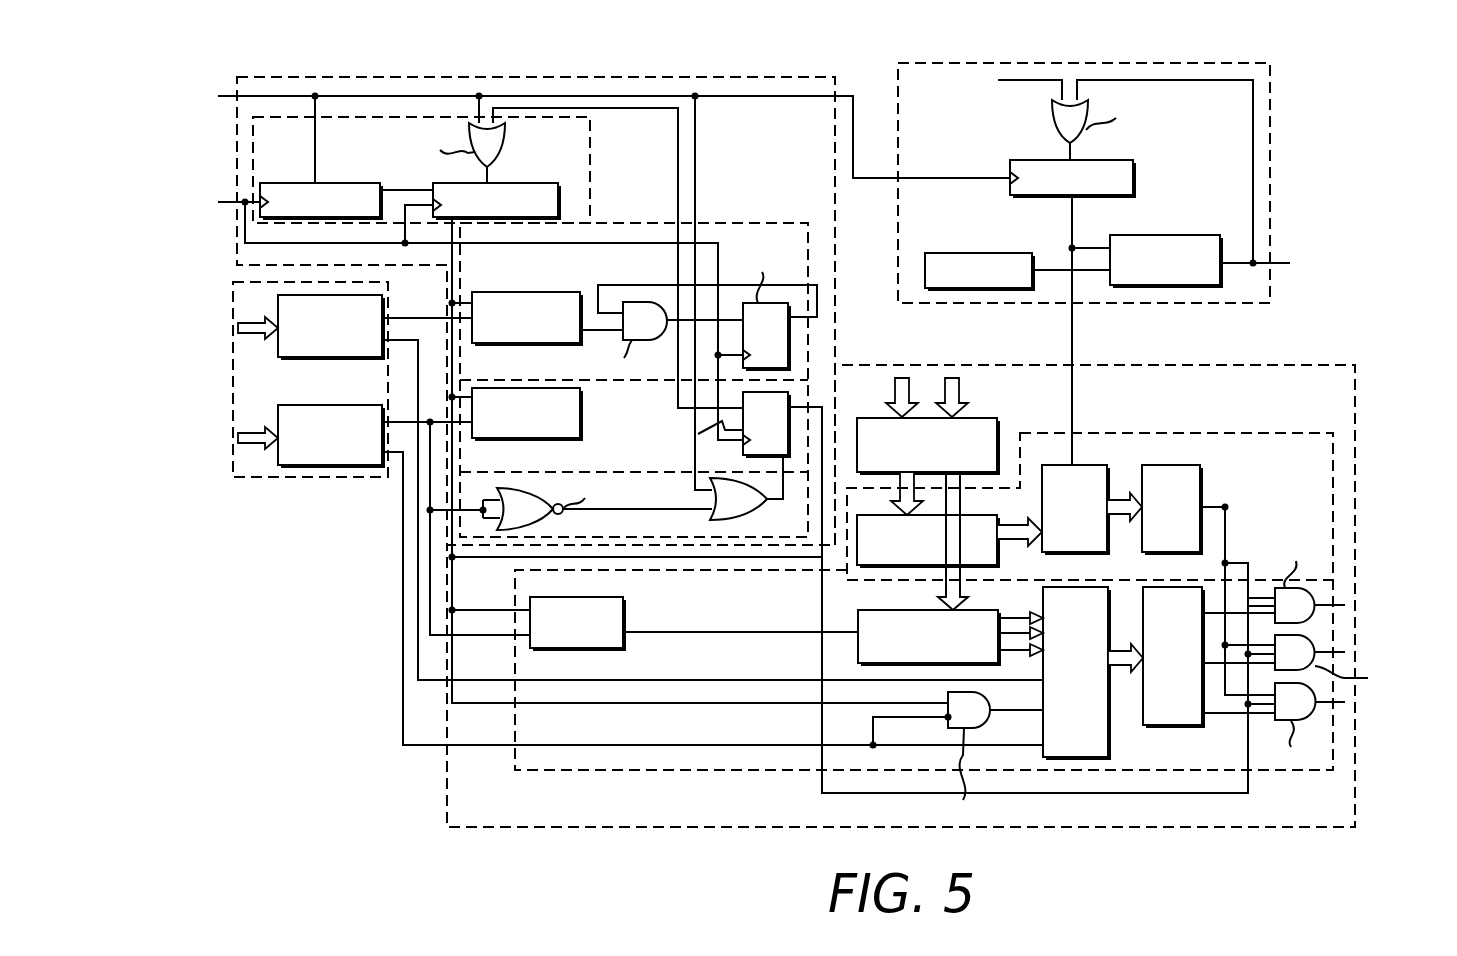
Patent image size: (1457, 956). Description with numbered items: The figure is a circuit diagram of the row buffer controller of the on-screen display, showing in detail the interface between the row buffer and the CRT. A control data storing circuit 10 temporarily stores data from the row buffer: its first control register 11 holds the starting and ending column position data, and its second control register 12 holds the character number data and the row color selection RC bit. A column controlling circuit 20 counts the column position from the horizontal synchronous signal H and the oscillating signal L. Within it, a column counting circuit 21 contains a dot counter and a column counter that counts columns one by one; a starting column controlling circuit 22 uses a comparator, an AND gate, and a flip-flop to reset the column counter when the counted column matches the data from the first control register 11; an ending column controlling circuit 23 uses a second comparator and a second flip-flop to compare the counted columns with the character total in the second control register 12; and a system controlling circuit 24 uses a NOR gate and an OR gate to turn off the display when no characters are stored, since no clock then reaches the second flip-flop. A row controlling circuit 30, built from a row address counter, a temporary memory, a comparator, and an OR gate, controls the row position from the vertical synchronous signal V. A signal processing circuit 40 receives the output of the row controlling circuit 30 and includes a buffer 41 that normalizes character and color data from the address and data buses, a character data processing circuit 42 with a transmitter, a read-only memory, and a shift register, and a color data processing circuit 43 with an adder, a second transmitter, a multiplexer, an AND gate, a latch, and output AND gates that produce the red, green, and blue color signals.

The control data storing circuit 10 is at (248, 477).
The first control register 11 is at (660, 487).
The second control register 12 is at (660, 577).
The column controlling circuit 20 is at (338, 77).
The column counting circuit 21 is at (360, 117).
The starting column controlling circuit 22 is at (762, 223).
The ending column controlling circuit 23 is at (462, 450).
The system controlling circuit 24 is at (462, 515).
The row controlling circuit 30 is at (1270, 145).
The signal processing circuit 40 is at (1295, 365).
The buffer 41 is at (927, 514).
The character data processing circuit 42 is at (1183, 433).
The color data processing circuit 43 is at (653, 772).